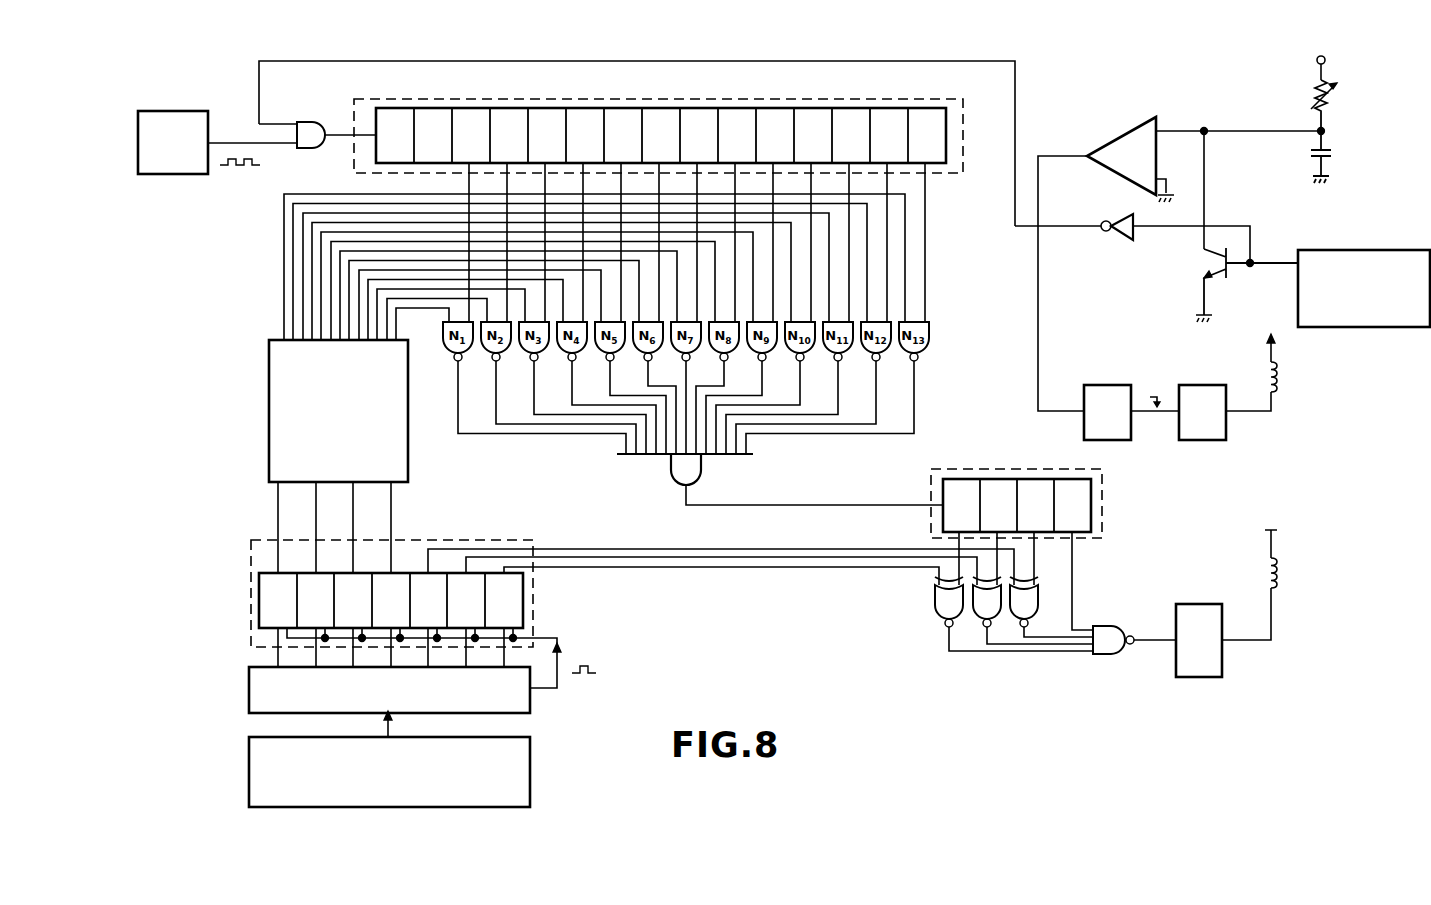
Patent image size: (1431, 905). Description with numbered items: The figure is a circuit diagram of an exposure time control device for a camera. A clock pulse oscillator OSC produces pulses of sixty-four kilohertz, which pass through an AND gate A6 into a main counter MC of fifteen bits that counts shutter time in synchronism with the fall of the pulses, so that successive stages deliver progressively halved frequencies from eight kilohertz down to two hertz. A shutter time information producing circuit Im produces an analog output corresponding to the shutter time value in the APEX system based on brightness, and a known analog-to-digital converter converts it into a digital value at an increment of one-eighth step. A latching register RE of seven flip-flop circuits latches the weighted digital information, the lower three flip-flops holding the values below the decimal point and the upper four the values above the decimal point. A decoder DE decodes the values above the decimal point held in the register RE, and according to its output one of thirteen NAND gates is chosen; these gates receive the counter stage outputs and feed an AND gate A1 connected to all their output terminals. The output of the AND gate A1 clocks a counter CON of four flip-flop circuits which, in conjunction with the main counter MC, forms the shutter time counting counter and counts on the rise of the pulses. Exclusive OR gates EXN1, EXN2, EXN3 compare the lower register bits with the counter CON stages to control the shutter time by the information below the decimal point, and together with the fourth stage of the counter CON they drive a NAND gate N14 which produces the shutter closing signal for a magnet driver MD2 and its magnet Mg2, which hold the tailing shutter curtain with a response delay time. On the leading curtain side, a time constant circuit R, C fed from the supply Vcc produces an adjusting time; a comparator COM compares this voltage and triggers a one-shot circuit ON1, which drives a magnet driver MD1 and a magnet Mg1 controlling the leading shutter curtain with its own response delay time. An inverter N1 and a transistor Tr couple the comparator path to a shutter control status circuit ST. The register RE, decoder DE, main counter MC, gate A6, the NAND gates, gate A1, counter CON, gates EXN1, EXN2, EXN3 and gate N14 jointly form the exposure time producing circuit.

The clock pulse oscillator OSC is at (217, 142).
The AND gate A6 is at (637, 143).
The main counter MC is at (964, 122).
The decoder DE is at (268, 404).
The AND gate A1 is at (701, 468).
The counter CON is at (1102, 512).
The exclusive OR gate EXN1 is at (936, 607).
The exclusive OR gate EXN2 is at (986, 637).
The exclusive OR gate EXN3 is at (1012, 635).
The NAND gate N14 is at (1114, 653).
The magnet driver MD2 is at (1223, 632).
The magnet Mg2 is at (1279, 571).
The comparator COM is at (1181, 264).
The inverter N1 is at (1119, 238).
The transistor Tr is at (1208, 259).
The supply voltage Vcc is at (1320, 57).
The resistor of time constant circuit R is at (1329, 102).
The capacitor of time constant circuit C is at (1332, 155).
The shutter control status circuit ST is at (1370, 249).
The one-shot circuit ON1 is at (1131, 412).
The magnet driver MD1 is at (1225, 412).
The magnet Mg1 is at (1280, 374).
The latching register RE is at (250, 583).
The shutter time information producing circuit Im is at (531, 772).